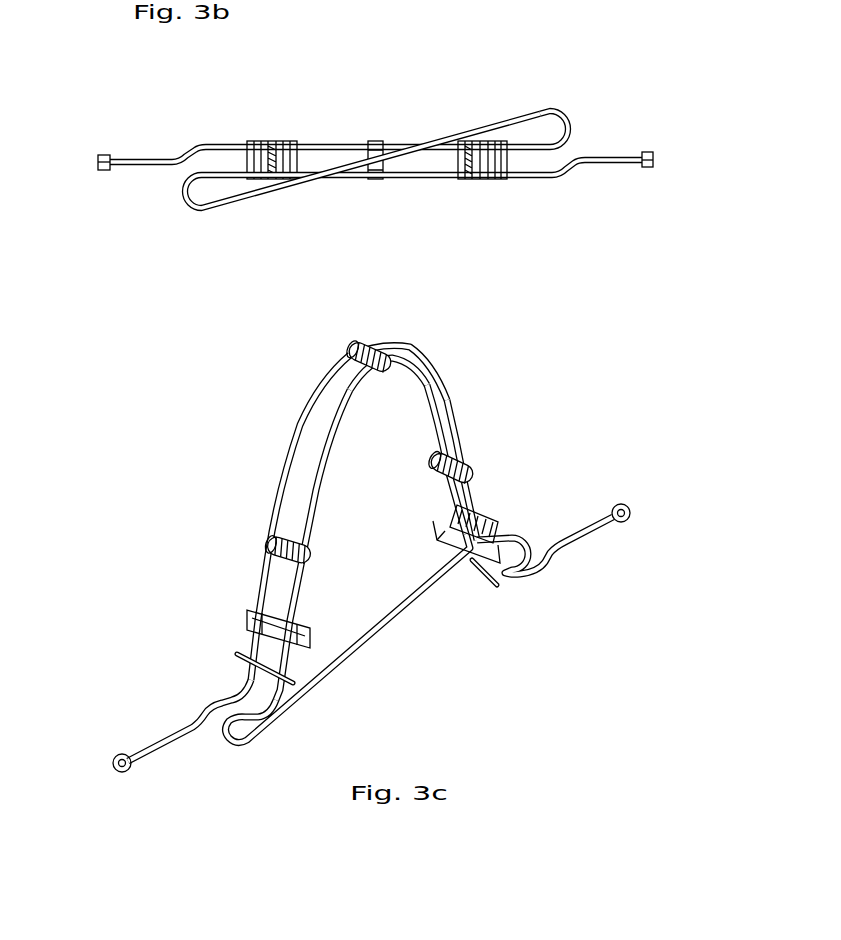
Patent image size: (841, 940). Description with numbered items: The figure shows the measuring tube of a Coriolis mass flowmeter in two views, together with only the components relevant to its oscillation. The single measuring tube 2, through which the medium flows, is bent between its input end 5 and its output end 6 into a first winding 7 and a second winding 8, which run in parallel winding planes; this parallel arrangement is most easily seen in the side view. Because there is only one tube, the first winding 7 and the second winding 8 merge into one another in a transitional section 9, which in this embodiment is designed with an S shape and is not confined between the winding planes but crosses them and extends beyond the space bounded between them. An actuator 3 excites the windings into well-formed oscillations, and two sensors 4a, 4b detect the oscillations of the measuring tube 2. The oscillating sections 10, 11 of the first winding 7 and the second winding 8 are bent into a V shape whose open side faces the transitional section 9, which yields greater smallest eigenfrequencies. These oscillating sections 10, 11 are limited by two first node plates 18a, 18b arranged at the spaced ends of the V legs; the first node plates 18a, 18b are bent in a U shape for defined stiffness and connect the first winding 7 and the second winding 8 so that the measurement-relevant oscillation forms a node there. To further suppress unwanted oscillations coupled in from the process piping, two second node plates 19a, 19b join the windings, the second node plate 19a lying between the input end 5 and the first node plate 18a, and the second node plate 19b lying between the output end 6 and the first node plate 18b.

In FIG. 3b, the measuring tube 2 is at (552, 110).
In FIG. 3c, the measuring tube 2 is at (440, 373).
In FIG. 3c, the actuator 3 is at (372, 340).
In FIG. 3c, the sensor 4a is at (272, 540).
In FIG. 3c, the sensor 4b is at (483, 458).
In FIG. 3b, the input end 5 is at (100, 157).
In FIG. 3c, the input end 5 is at (115, 765).
In FIG. 3b, the output end 6 is at (647, 153).
In FIG. 3c, the output end 6 is at (630, 507).
In FIG. 3b, the first winding 7 is at (340, 147).
In FIG. 3c, the first winding 7 is at (290, 465).
In FIG. 3b, the second winding 8 is at (408, 183).
In FIG. 3c, the second winding 8 is at (459, 425).
In FIG. 3b, the transitional section 9 is at (488, 100).
In FIG. 3c, the transitional section 9 is at (413, 650).
In FIG. 3c, the oscillating section 10 is at (559, 375).
In FIG. 3c, the oscillating section 11 is at (559, 375).
In FIG. 3c, the first node plate 18a is at (250, 610).
In FIG. 3c, the first node plate 18b is at (470, 520).
In FIG. 3c, the second node plate 19a is at (237, 655).
In FIG. 3c, the second node plate 19b is at (483, 575).